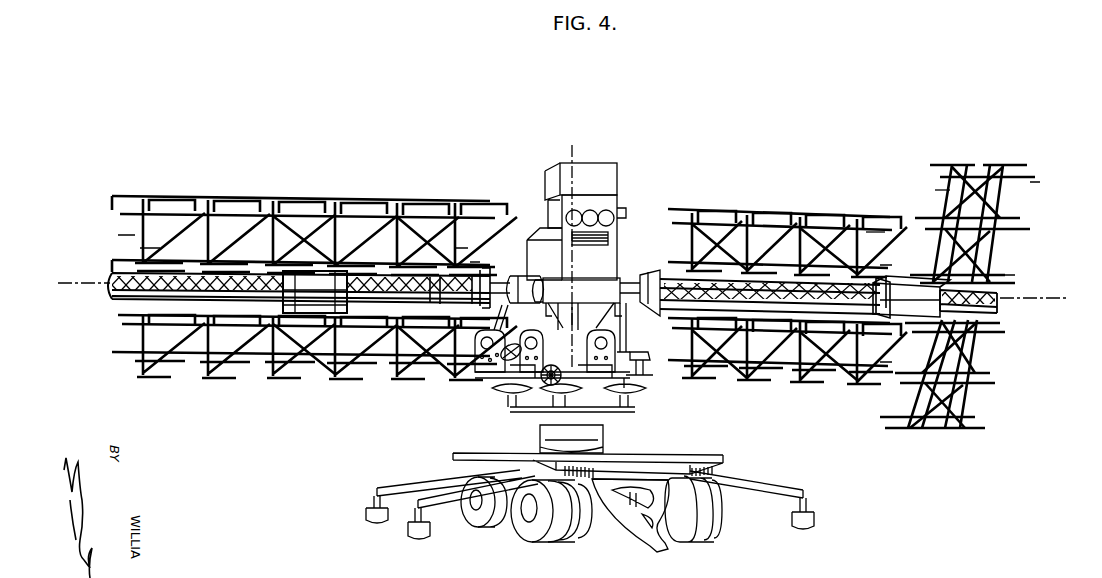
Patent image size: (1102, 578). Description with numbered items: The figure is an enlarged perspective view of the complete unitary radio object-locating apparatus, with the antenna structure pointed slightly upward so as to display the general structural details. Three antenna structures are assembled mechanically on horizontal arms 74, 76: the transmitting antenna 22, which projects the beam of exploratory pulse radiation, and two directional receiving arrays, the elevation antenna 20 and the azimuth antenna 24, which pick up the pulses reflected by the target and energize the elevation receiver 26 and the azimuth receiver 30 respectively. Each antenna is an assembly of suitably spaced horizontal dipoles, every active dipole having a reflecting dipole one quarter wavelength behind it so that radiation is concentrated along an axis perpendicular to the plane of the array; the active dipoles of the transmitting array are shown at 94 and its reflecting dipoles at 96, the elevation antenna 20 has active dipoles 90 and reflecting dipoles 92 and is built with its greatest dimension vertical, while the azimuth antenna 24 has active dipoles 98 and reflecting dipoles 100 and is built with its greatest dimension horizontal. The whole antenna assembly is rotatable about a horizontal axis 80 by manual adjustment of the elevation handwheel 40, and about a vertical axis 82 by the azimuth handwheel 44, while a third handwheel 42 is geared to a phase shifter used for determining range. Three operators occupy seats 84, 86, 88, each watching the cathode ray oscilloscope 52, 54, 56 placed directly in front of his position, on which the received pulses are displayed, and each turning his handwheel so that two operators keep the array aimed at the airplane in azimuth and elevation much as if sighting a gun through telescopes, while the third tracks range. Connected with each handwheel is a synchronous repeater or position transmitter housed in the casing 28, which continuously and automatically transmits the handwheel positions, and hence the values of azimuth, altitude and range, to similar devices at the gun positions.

The elevation receiving antenna 20 is at (996, 162).
The transmitting antenna 22 is at (765, 207).
The azimuth receiving antenna 24 is at (313, 198).
The elevation receiver 26 is at (897, 312).
The casing 28 is at (617, 255).
The azimuth receiver 30 is at (297, 312).
The elevation handwheel 40 is at (650, 360).
The range handwheel 42 is at (505, 372).
The azimuth handwheel 44 is at (545, 385).
The cathode ray oscilloscope 52 is at (582, 330).
The cathode ray oscilloscope 54 is at (482, 330).
The cathode ray oscilloscope 56 is at (532, 330).
The horizontal arm 74 is at (112, 300).
The horizontal arm 76 is at (1000, 312).
The horizontal axis 80 is at (563, 292).
The vertical axis 82 is at (575, 152).
The operator seat 84 is at (505, 395).
The operator seat 86 is at (548, 396).
The operator seat 88 is at (636, 394).
The active dipoles 90 is at (933, 208).
The reflecting dipoles 92 is at (1015, 275).
The active dipoles 94 is at (866, 232).
The reflecting dipoles 96 is at (892, 362).
The active dipoles 98 is at (468, 248).
The reflecting dipoles 100 is at (480, 262).